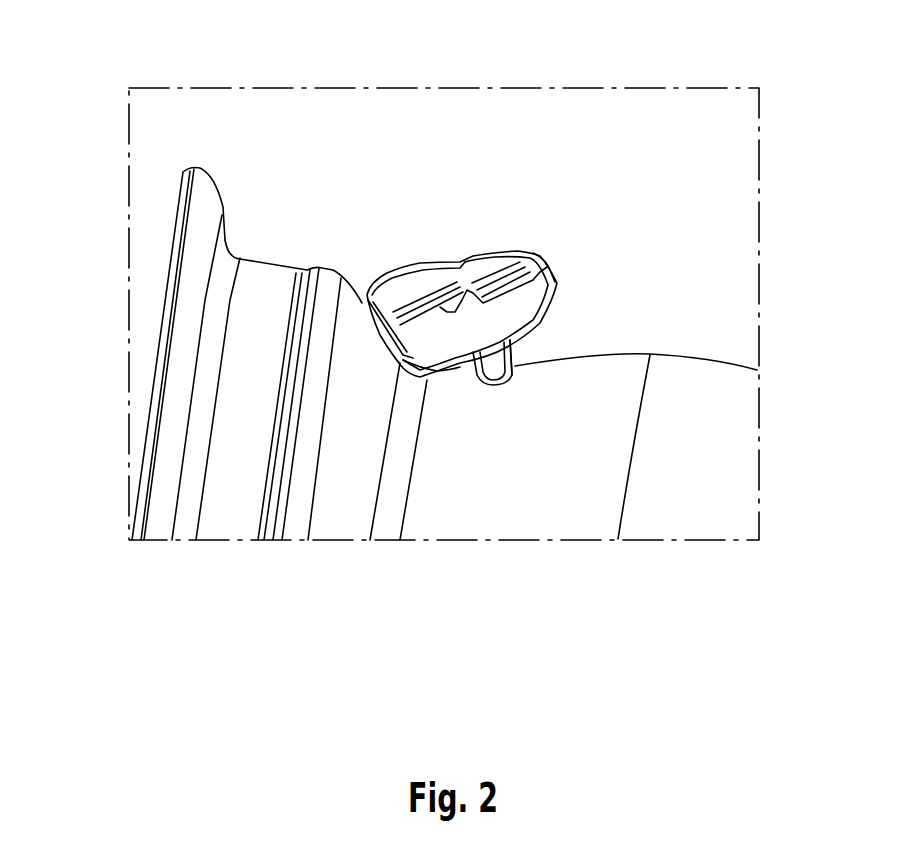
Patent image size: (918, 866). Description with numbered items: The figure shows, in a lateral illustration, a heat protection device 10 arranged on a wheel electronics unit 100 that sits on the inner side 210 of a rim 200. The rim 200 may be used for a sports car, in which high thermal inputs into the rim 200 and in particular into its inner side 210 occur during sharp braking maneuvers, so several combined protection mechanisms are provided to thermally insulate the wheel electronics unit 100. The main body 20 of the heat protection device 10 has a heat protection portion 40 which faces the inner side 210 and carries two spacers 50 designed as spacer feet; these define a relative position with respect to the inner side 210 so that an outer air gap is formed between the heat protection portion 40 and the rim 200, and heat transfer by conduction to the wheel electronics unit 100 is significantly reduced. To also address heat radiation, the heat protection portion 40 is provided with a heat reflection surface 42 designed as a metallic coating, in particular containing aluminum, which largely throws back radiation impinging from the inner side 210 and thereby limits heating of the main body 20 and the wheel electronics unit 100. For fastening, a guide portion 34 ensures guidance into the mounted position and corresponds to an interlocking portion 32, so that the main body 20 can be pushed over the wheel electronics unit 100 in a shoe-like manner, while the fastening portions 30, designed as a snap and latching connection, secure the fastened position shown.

The heat protection device 10 is at (662, 307).
The main body 20 is at (547, 262).
The fastening portions 30 is at (452, 262).
The interlocking portion 32 is at (495, 258).
The guide portion 34 is at (523, 292).
The heat protection portion 40 is at (460, 347).
The heat reflection surface 42 is at (518, 342).
The spacers 50 is at (493, 363).
The wheel electronics unit 100 is at (428, 263).
The rim 200 is at (205, 488).
The inner side 210 is at (705, 470).